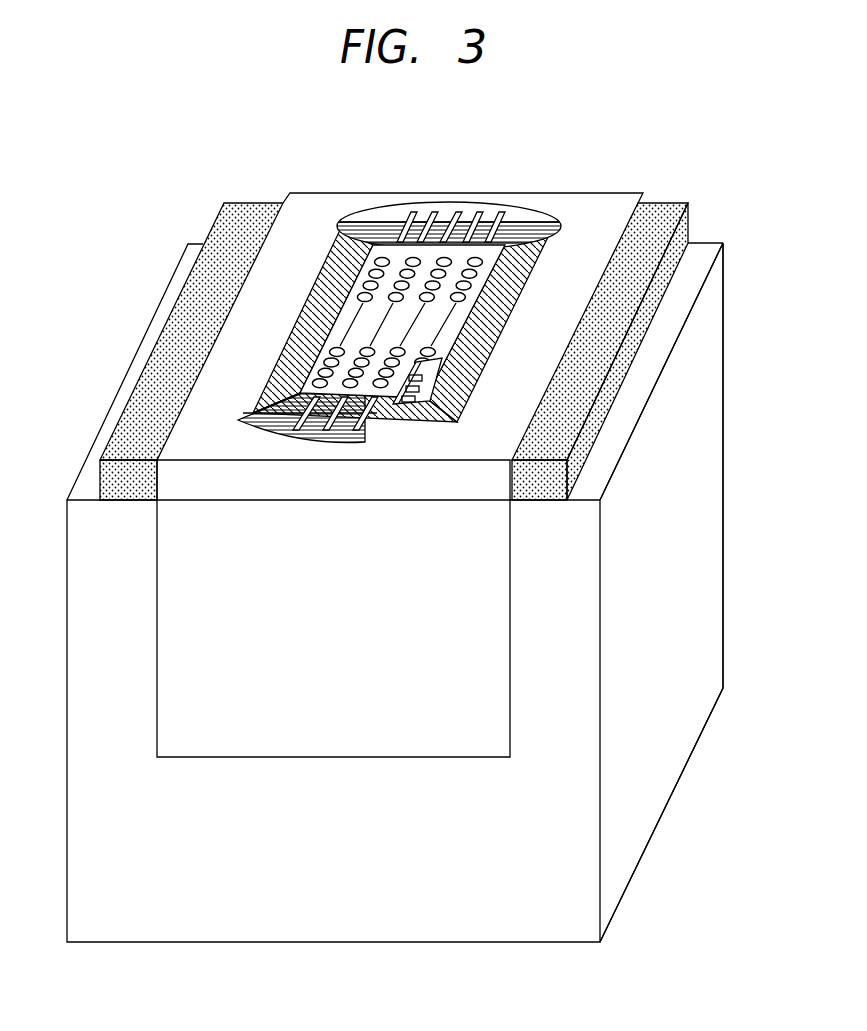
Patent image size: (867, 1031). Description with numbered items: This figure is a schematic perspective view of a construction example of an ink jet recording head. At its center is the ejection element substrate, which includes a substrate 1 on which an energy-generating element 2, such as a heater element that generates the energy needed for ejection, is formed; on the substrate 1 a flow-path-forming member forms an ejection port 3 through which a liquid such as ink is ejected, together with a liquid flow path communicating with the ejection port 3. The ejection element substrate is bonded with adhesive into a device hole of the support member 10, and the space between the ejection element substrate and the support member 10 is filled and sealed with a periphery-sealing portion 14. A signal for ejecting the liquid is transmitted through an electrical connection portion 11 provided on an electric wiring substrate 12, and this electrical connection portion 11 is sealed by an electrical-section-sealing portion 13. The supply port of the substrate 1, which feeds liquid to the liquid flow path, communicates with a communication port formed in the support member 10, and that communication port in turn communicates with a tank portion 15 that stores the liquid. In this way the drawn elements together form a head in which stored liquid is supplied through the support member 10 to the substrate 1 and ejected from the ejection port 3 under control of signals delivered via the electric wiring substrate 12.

The substrate 1 is at (343, 323).
The energy-generating element 2 is at (472, 387).
The ejection port 3 is at (370, 287).
The support member 10 is at (655, 218).
The electrical connection portion 11 is at (433, 217).
The electric wiring substrate 12 is at (312, 205).
The electrical-section-sealing portion 13 is at (383, 213).
The periphery-sealing portion 14 is at (330, 255).
The tank portion 15 is at (642, 792).